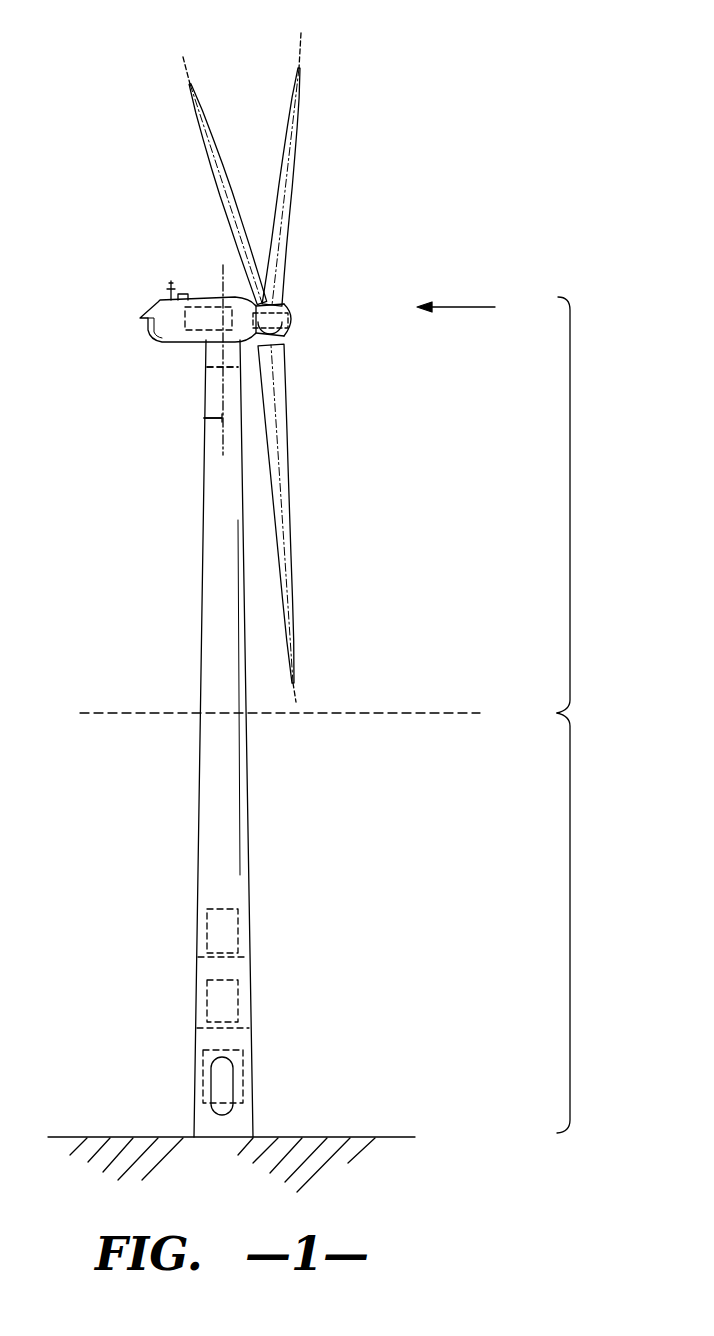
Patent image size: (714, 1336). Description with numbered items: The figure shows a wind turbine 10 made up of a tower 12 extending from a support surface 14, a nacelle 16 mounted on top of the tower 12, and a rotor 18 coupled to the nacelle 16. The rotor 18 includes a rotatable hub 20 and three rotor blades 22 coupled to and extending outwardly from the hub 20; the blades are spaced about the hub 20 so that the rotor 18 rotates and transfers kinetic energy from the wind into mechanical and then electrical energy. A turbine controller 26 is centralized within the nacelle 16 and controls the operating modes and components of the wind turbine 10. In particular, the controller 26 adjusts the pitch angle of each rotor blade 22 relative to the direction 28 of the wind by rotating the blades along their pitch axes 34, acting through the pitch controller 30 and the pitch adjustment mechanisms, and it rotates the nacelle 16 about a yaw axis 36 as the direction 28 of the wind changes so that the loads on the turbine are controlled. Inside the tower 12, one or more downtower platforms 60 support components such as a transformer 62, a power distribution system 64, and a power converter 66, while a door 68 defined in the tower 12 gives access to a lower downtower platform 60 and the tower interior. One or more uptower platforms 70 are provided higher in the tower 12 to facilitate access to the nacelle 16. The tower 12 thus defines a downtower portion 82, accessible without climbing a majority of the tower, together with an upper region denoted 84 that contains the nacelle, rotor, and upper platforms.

The wind turbine 10 is at (395, 141).
The tower 12 is at (210, 848).
The support surface 14 is at (125, 1135).
The nacelle 16 is at (185, 343).
The rotor 18 is at (300, 297).
The rotatable hub 20 is at (292, 322).
The rotor blade 22 is at (228, 175).
The turbine controller 26 is at (200, 295).
The direction of the wind 28 is at (470, 305).
The pitch controller 30 is at (295, 308).
The pitch axis 34 is at (182, 76).
The yaw axis 36 is at (200, 420).
The downtower platform 60 is at (250, 962).
The transformer 62 is at (200, 1067).
The power distribution system 64 is at (207, 1000).
The power converter 66 is at (207, 925).
The door 68 is at (235, 1082).
The uptower platform 70 is at (203, 392).
The downtower portion 82 is at (589, 923).
The upper tower section 84 is at (589, 505).